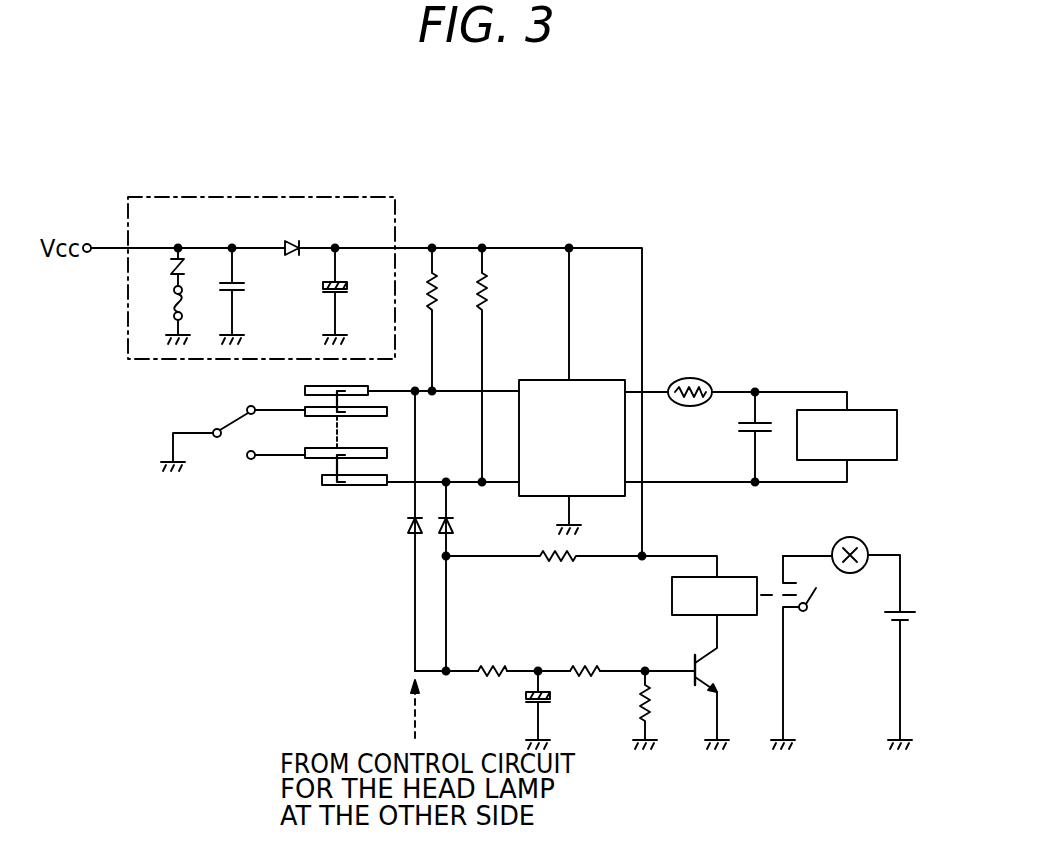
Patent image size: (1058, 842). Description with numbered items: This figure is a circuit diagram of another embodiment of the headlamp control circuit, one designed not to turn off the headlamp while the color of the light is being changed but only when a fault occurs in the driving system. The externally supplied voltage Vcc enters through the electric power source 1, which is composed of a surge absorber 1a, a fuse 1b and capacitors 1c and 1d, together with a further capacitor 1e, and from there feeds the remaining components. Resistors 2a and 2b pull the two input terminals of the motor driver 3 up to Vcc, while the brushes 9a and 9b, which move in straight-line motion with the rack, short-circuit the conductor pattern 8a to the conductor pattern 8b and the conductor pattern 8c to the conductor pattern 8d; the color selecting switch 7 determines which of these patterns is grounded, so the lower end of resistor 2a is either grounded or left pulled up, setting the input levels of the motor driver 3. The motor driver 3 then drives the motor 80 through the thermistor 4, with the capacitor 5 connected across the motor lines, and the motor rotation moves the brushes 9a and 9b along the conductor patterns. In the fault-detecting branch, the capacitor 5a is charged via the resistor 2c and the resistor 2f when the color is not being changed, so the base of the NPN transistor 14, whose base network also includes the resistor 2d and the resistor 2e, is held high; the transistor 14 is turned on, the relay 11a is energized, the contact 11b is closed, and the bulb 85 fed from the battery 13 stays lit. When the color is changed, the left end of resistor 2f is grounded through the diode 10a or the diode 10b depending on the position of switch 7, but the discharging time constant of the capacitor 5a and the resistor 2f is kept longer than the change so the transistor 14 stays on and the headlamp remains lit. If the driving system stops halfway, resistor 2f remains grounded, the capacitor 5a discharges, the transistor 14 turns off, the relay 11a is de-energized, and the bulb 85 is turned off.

The electric power source 1 is at (168, 197).
The surge absorber 1a is at (170, 267).
The fuse 1b is at (167, 303).
The capacitor 1c is at (243, 295).
The capacitor 1d is at (297, 238).
The electrolytic capacitor 1e is at (342, 297).
The resistor 2a is at (440, 292).
The resistor 2b is at (490, 292).
The resistor 2c is at (555, 565).
The resistor 2d is at (582, 665).
The resistor 2e is at (652, 700).
The resistor 2f is at (492, 678).
The motor driver 3 is at (588, 380).
The thermistor 4 is at (692, 378).
The capacitor 5 is at (778, 408).
The capacitor 5a is at (555, 697).
The color selecting switch 7 is at (232, 440).
The conductor pattern 8a is at (305, 388).
The conductor pattern 8b is at (310, 417).
The conductor pattern 8c is at (310, 460).
The conductor pattern 8d is at (352, 487).
The brush 9a is at (305, 403).
The brush 9b is at (333, 465).
The diode 10a is at (407, 524).
The diode 10b is at (453, 525).
The relay 11a is at (737, 560).
The contact 11b is at (792, 617).
The battery 13 is at (886, 622).
The NPN transistor 14 is at (712, 672).
The motor 80 is at (868, 410).
The bulb 85 is at (845, 572).